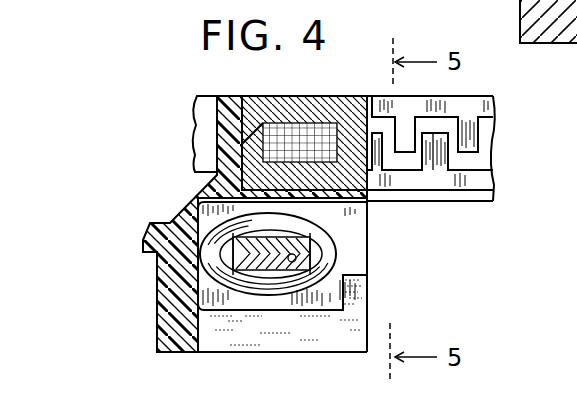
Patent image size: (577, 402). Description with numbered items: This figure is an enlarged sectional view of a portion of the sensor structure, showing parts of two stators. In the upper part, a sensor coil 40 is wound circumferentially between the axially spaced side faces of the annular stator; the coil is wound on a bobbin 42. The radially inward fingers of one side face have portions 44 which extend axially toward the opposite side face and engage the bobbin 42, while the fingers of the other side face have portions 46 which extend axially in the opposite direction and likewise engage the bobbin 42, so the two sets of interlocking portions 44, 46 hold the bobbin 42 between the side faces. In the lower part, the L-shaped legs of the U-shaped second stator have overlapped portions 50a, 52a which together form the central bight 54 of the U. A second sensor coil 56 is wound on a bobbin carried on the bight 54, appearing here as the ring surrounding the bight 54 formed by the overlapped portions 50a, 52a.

The sensor coil 40 is at (295, 128).
The bobbin 42 is at (323, 120).
The portions of fingers 44 is at (470, 134).
The portions of fingers 46 is at (436, 160).
The overlapped portion of leg 50a is at (322, 231).
The overlapped portion of leg 52a is at (237, 257).
The central bight 54 is at (311, 257).
The sensor coil 56 is at (322, 278).